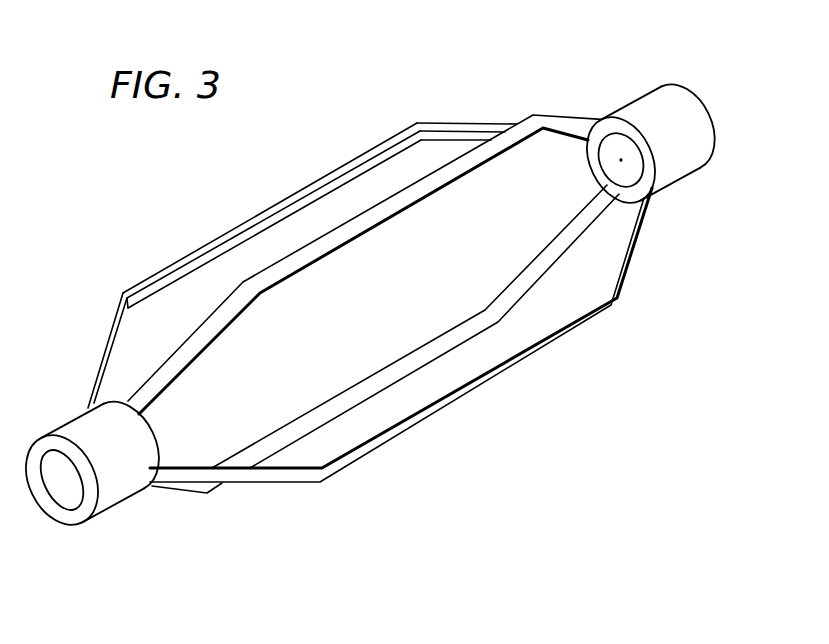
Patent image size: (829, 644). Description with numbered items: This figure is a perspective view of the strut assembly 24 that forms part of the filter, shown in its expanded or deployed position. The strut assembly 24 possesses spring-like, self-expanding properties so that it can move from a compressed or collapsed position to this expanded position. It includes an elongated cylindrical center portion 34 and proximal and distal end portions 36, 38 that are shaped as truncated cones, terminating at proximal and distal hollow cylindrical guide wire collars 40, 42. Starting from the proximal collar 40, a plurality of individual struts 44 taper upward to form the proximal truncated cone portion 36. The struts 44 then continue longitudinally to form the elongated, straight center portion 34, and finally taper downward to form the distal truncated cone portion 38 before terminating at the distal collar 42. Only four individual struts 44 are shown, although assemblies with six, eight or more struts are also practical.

The strut assembly 24 is at (358, 100).
The center portion 34 is at (490, 383).
The proximal end portion 36 is at (100, 356).
The distal end portion 38 is at (468, 122).
The proximal guide wire collar 40 is at (113, 487).
The distal guide wire collar 42 is at (653, 98).
The struts 44 is at (204, 247).